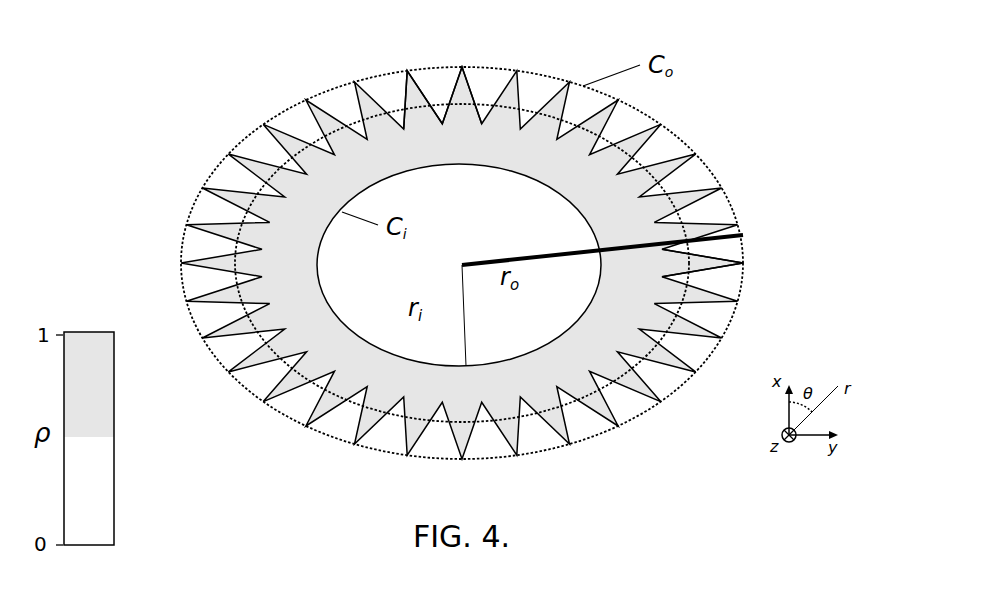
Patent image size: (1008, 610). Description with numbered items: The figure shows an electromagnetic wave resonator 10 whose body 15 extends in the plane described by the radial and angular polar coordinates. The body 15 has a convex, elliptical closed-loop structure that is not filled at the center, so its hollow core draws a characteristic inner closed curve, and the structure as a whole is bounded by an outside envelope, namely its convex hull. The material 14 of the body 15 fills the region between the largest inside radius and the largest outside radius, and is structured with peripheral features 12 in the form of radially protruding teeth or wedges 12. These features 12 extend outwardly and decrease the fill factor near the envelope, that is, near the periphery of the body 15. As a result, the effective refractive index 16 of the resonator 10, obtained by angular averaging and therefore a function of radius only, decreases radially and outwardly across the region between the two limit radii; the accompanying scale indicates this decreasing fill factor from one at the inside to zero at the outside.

The electromagnetic wave resonator 10 is at (725, 142).
The peripheral features 12 is at (720, 268).
The material 14 is at (457, 404).
The body 15 is at (494, 404).
The effective refractive index 16 is at (450, 98).